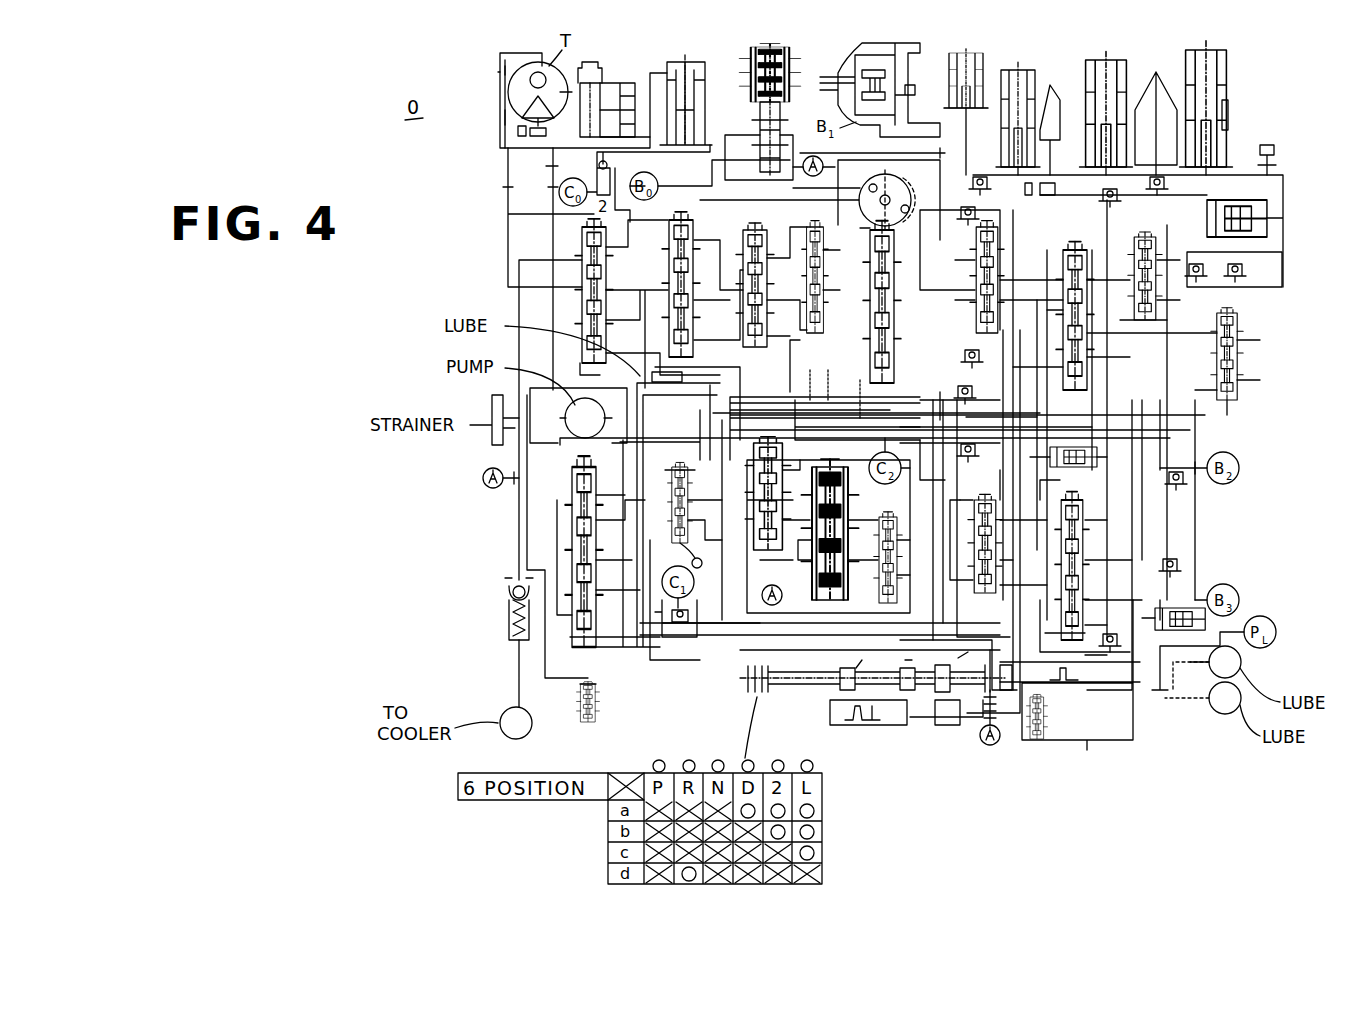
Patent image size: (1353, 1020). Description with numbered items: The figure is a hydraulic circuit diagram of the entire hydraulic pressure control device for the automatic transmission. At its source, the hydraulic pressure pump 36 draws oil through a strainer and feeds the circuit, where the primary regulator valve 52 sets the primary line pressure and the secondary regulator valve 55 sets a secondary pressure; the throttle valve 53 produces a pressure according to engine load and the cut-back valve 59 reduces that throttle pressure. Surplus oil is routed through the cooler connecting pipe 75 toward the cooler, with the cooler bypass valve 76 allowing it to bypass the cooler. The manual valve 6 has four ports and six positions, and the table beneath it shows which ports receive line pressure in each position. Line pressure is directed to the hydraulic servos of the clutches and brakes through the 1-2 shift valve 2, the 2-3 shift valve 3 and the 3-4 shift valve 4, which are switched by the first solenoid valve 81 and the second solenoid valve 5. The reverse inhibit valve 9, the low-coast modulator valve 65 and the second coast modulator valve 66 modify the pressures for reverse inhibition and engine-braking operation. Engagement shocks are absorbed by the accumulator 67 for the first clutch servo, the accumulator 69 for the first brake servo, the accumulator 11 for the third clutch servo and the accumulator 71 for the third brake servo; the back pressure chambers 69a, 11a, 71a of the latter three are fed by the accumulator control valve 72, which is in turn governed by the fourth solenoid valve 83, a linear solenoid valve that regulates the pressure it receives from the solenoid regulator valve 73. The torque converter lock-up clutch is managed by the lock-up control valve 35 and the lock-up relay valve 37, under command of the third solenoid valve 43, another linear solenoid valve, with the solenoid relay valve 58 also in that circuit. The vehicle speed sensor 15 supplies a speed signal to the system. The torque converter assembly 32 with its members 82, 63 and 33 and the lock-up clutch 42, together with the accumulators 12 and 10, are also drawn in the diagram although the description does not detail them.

The torque converter 32 is at (531, 58).
The pump impeller 82 is at (500, 72).
The turbine runner 63 is at (505, 118).
The stator 33 is at (518, 128).
The lock-up clutch 42 is at (577, 80).
The vehicle speed sensor 15 is at (606, 79).
The accumulator for C0 67 is at (708, 76).
The third solenoid valve 43 is at (788, 66).
The first solenoid valve 81 is at (968, 52).
The accumulator for B0 69 is at (1022, 70).
The back pressure chamber 69a is at (1055, 98).
The accumulator for C2 11 is at (1112, 52).
The back pressure chamber 11a is at (1145, 125).
The accumulator for B2 71 is at (1224, 62).
The back pressure chamber 71a is at (1230, 114).
The lock-up relay valve 37 is at (582, 250).
The lock-up control valve 35 is at (706, 230).
The secondary regulator valve 55 is at (754, 234).
The solenoid relay valve 58 is at (809, 234).
The throttle valve 53 is at (866, 227).
The 3-4 shift valve 4 is at (1003, 224).
The 2-3 shift valve 3 is at (1068, 252).
The second coast modulator valve 66 is at (1136, 252).
The second solenoid valve 5 is at (1245, 234).
The low-coast modulator valve 65 is at (1246, 333).
The hydraulic pressure pump 36 is at (561, 408).
The primary regulator valve 52 is at (561, 511).
The cut-back valve 59 is at (672, 472).
The accumulator control valve 72 is at (755, 441).
The fourth solenoid valve 83 is at (805, 474).
The solenoid regulator valve 73 is at (874, 514).
The reverse inhibit valve 9 is at (970, 497).
The 1-2 shift valve 2 is at (1084, 506).
The accumulator 12 is at (1042, 464).
The accumulator 10 is at (1220, 618).
The cooler connecting pipe 75 is at (509, 605).
The cooler bypass valve 76 is at (600, 702).
The manual valve 6 is at (744, 677).